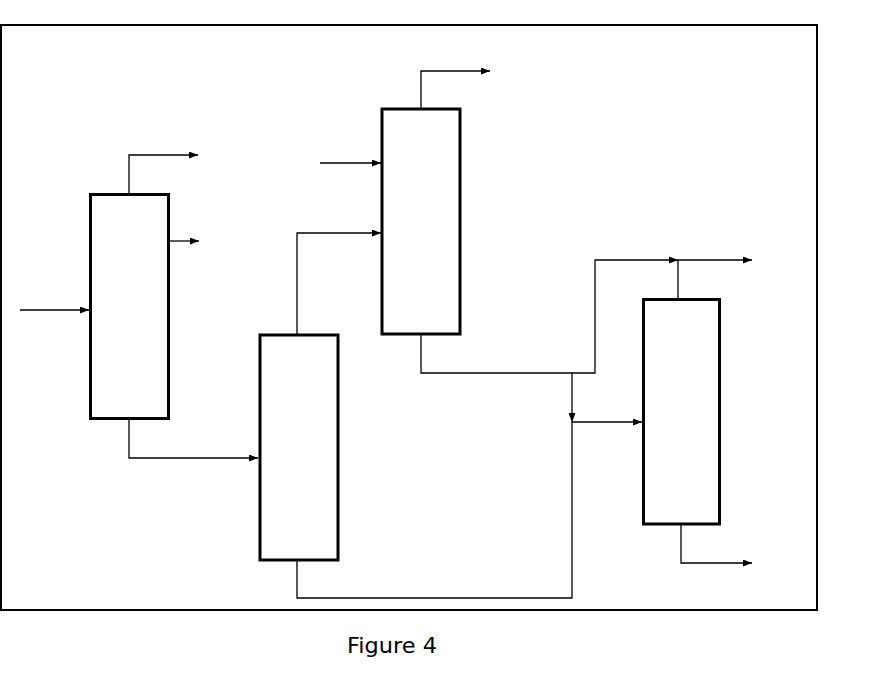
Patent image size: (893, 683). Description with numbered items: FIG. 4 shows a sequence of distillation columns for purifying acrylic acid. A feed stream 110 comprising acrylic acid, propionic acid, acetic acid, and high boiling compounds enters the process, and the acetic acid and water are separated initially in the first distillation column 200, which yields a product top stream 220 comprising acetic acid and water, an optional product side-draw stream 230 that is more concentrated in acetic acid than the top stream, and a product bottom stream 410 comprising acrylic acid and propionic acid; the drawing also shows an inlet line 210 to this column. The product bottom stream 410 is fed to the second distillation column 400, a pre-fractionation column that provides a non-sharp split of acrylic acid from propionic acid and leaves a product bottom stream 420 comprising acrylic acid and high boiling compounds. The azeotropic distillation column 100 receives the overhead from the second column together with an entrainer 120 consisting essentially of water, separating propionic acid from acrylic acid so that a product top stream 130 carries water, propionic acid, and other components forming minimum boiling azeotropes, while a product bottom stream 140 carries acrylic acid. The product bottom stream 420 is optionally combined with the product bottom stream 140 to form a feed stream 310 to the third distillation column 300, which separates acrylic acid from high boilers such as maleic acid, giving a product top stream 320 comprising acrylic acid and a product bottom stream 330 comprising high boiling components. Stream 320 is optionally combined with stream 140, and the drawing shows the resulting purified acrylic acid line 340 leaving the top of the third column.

The azeotropic distillation column 100 is at (421, 221).
The feed stream 110 is at (328, 225).
The entrainer 120 is at (337, 155).
The product top stream 130 is at (450, 67).
The product bottom stream 140 is at (507, 365).
The first distillation column 200 is at (130, 307).
The feed stream to unit 200 210 is at (40, 300).
The product top stream 220 is at (160, 152).
The product side-draw stream 230 is at (187, 230).
The third distillation column 300 is at (682, 412).
The feed stream 310 is at (595, 417).
The product top stream 320 is at (687, 275).
The product bottom stream 330 is at (727, 553).
The product stream 340 is at (717, 252).
The second distillation column 400 is at (299, 447).
The product bottom stream 410 is at (198, 453).
The product bottom stream 420 is at (413, 594).